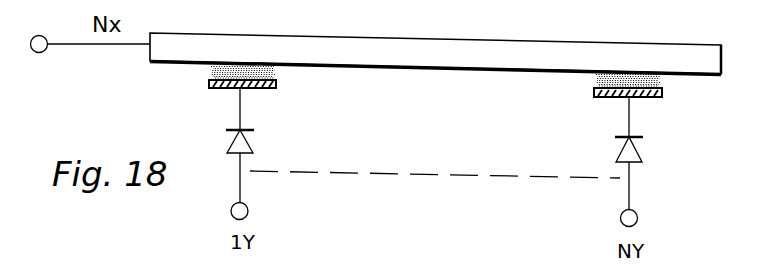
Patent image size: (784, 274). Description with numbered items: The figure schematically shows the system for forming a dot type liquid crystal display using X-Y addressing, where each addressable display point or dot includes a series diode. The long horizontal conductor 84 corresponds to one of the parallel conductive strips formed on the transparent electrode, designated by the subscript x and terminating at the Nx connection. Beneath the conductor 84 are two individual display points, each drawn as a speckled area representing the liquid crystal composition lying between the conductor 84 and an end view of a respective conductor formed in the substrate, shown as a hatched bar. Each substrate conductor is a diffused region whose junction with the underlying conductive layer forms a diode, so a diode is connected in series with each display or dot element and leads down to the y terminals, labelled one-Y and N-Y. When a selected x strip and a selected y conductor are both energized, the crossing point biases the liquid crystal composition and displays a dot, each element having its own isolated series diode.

The conductor 84 is at (197, 34).